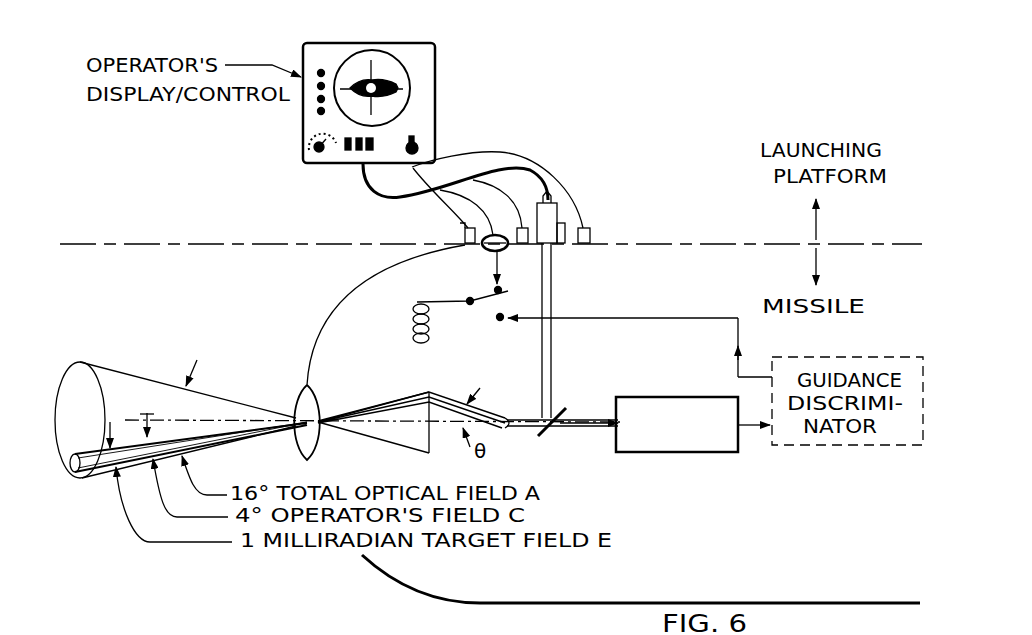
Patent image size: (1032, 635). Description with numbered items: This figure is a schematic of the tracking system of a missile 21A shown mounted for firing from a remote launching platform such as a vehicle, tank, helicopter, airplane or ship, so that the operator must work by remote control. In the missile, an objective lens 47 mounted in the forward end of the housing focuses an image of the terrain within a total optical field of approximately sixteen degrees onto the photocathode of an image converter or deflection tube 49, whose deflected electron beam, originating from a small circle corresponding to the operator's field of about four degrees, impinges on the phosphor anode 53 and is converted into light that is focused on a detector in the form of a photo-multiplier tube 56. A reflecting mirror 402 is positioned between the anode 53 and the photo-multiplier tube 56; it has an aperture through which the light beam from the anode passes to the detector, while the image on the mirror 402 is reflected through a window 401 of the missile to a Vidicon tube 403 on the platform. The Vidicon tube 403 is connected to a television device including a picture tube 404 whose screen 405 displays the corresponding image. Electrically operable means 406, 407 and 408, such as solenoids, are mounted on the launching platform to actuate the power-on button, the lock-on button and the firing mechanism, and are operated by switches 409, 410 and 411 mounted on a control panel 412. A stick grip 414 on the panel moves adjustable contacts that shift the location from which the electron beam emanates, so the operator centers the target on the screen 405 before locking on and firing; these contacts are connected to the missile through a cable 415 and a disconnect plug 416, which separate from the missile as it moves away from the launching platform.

The picture tube 404 is at (354, 118).
The control panel 412 is at (437, 63).
The screen 405 is at (405, 107).
The stick grip 414 is at (413, 141).
The switch 409 is at (347, 151).
The switch 410 is at (355, 151).
The switch 411 is at (365, 151).
The Vidicon tube 403 is at (553, 193).
The cable 415 is at (577, 190).
The disconnect plug 416 is at (590, 233).
The electrically operable means 406 is at (462, 241).
The electrically operable means 407 is at (490, 251).
The electrically operable means 408 is at (527, 252).
The window 401 is at (553, 248).
The missile 21A is at (333, 318).
The objective lens 47 is at (296, 388).
The mirror 402 is at (568, 414).
The anode 53 is at (505, 428).
The photo-multiplier tube 56 is at (680, 452).
The image converter or deflection tube 49 is at (237, 632).